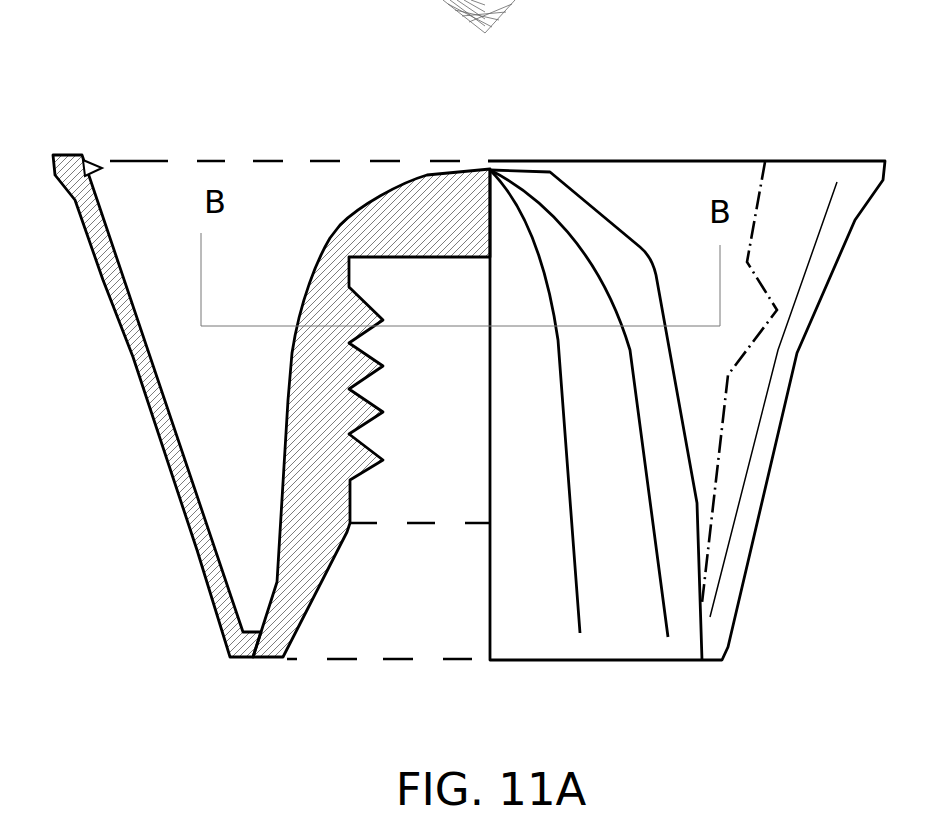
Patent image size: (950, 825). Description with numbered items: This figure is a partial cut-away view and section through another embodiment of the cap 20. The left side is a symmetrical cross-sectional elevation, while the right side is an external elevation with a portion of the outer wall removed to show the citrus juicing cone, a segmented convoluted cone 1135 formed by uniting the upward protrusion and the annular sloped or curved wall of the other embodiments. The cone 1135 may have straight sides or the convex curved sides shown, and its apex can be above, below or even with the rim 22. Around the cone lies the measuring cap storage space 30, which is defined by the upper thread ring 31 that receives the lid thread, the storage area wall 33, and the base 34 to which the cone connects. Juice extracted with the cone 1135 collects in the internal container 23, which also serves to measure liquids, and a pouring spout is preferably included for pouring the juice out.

The cap 20 is at (118, 487).
The rim 22 is at (82, 155).
The internal container 23 is at (432, 583).
The measuring cap storage space 30 is at (672, 208).
The upper thread ring 31 is at (120, 152).
The storage area wall 33 is at (173, 338).
The base 34 is at (252, 573).
The segmented convoluted cone 1135 is at (577, 193).